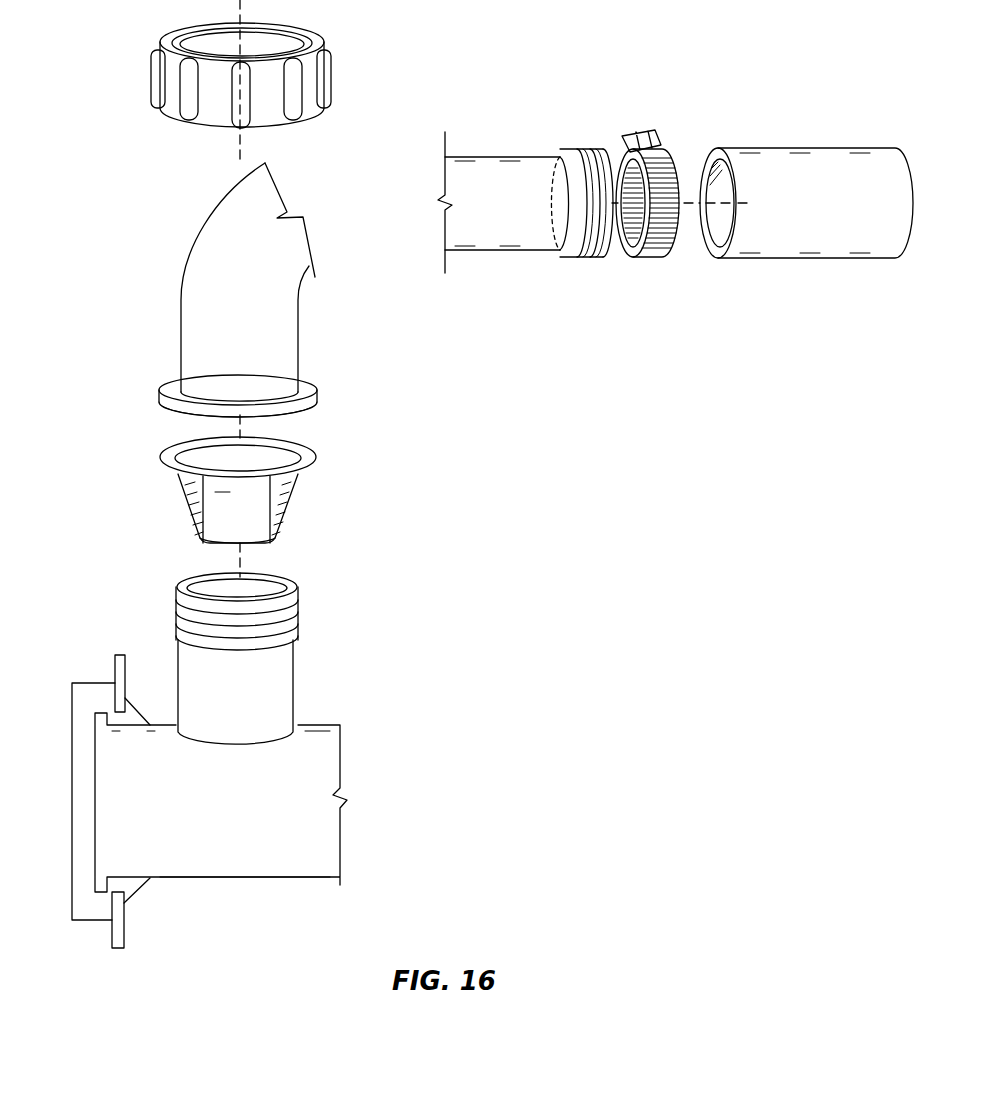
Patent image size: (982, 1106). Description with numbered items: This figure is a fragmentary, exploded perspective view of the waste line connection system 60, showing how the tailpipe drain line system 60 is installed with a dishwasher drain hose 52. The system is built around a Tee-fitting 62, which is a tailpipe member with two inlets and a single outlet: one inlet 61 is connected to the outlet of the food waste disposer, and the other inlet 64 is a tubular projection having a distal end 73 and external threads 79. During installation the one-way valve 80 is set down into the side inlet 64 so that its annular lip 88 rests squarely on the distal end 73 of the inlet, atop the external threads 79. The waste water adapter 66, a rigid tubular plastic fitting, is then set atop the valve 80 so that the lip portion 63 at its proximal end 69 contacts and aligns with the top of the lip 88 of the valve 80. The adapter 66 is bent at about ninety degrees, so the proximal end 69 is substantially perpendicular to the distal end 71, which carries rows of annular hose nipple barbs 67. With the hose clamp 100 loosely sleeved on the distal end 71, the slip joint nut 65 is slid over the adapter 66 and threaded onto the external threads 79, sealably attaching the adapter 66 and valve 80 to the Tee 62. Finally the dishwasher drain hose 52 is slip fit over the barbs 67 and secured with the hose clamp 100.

The slip joint nut 65 is at (327, 75).
The waste water adapter 66 is at (215, 228).
The lip portion 63 is at (315, 398).
The proximal end 69 is at (172, 408).
The lip of valve 88 is at (305, 460).
The one-way valve 80 is at (303, 496).
The distal end of side inlet 73 is at (290, 580).
The external threads 79 is at (300, 620).
The inlet 64 is at (285, 688).
The inlet 61 is at (93, 790).
The Tee-fitting 62 is at (228, 882).
The annular hose barbs 67 is at (598, 160).
The distal end 71 is at (605, 250).
The hose clamp 100 is at (650, 138).
The dishwasher drain hose 52 is at (795, 160).
The waste line system 60 is at (488, 388).